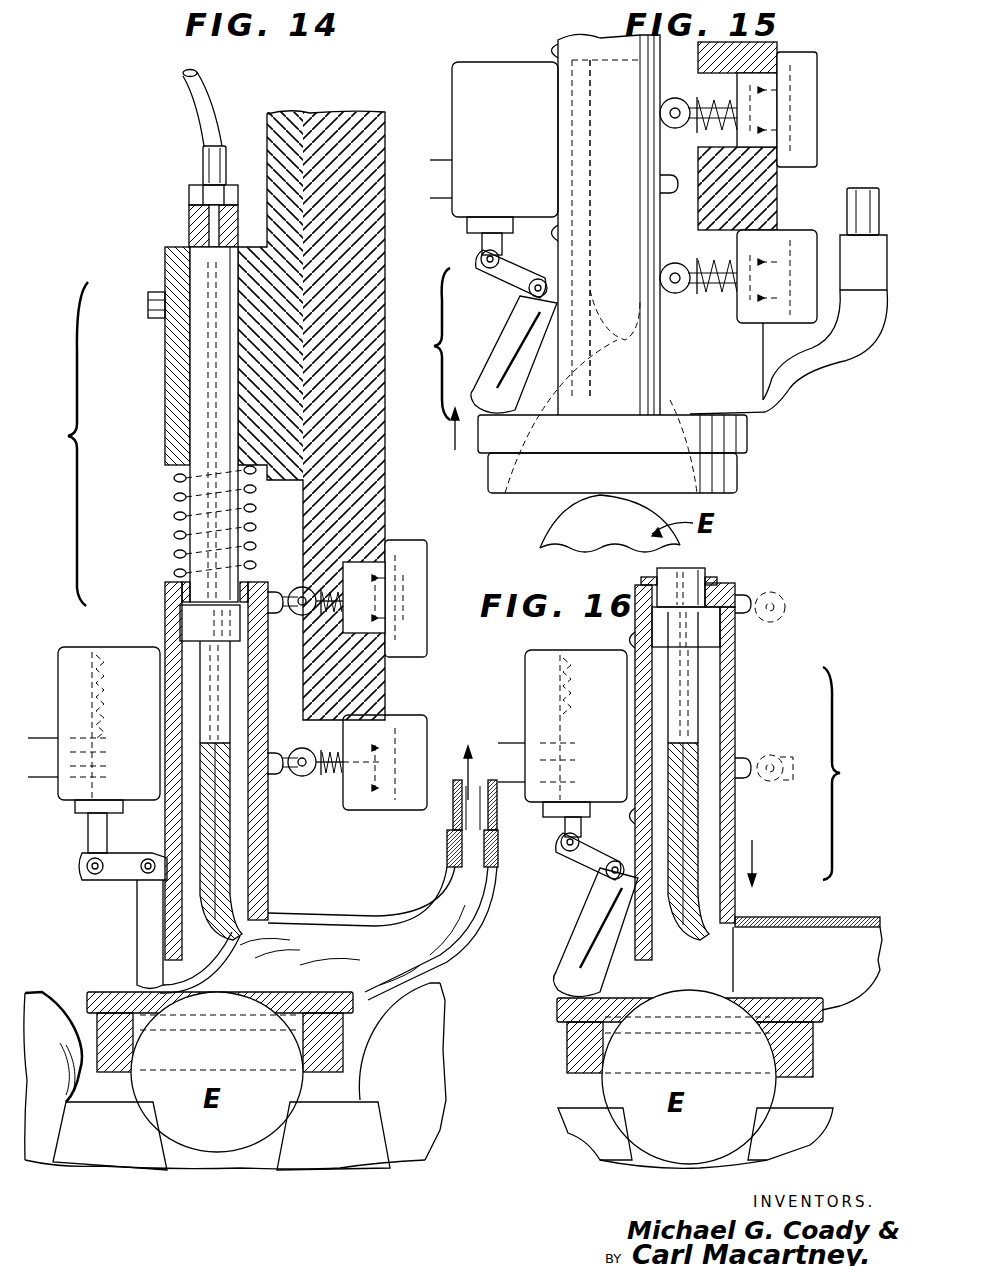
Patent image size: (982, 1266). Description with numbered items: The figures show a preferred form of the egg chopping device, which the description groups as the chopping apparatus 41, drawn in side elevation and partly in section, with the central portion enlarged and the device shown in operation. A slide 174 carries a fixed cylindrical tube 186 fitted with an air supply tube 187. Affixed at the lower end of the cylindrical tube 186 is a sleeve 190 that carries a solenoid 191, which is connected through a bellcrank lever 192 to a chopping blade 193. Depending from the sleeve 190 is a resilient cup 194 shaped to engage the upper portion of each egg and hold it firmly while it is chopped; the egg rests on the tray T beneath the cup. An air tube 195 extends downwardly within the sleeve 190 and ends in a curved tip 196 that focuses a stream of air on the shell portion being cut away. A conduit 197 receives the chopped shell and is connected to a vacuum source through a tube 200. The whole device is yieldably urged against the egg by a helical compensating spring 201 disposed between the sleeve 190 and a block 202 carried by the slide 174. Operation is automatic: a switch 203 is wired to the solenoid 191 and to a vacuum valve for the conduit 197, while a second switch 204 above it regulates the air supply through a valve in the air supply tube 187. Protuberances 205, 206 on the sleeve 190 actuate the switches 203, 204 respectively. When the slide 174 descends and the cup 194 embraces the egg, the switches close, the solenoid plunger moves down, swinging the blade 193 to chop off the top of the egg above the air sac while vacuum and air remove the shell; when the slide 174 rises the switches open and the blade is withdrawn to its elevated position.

In FIG. 14, the lubricating device assembly 41 is at (55, 444).
In FIG. 15, the lubricating device assembly 41 is at (426, 359).
In FIG. 16, the lubricating device assembly 41 is at (818, 776).
In FIG. 14, the slide 174 is at (283, 112).
In FIG. 14, the fixed cylindrical tube 186 is at (200, 432).
In FIG. 16, the fixed cylindrical tube 186 is at (690, 573).
In FIG. 14, the air supply tube 187 is at (203, 114).
In FIG. 14, the sleeve 190 is at (172, 594).
In FIG. 15, the sleeve 190 is at (563, 108).
In FIG. 14, the solenoid 191 is at (70, 640).
In FIG. 15, the solenoid 191 is at (494, 147).
In FIG. 16, the solenoid 191 is at (540, 650).
In FIG. 14, the bellcrank lever 192 is at (148, 912).
In FIG. 15, the bellcrank lever 192 is at (515, 328).
In FIG. 16, the bellcrank lever 192 is at (600, 906).
In FIG. 14, the chopping blade 193 is at (208, 977).
In FIG. 15, the chopping blade 193 is at (524, 406).
In FIG. 16, the chopping blade 193 is at (602, 985).
In FIG. 14, the resilient cup 194 is at (116, 1056).
In FIG. 15, the resilient cup 194 is at (507, 482).
In FIG. 16, the resilient cup 194 is at (580, 1053).
In FIG. 14, the air tube 195 is at (231, 828).
In FIG. 15, the air tube 195 is at (590, 200).
In FIG. 16, the air tube 195 is at (668, 676).
In FIG. 14, the curved tip 196 is at (238, 904).
In FIG. 15, the curved tip 196 is at (627, 343).
In FIG. 16, the curved tip 196 is at (686, 859).
In FIG. 14, the conduit 197 is at (458, 936).
In FIG. 15, the conduit 197 is at (830, 352).
In FIG. 16, the conduit 197 is at (873, 972).
In FIG. 14, the tube 200 is at (455, 795).
In FIG. 15, the tube 200 is at (862, 200).
In FIG. 14, the helical compensating spring 201 is at (185, 506).
In FIG. 14, the block 202 is at (176, 354).
In FIG. 14, the switch 203 is at (405, 738).
In FIG. 15, the switch 203 is at (783, 240).
In FIG. 14, the switch 204 is at (413, 612).
In FIG. 15, the switch 204 is at (802, 105).
In FIG. 14, the protuberance 205 is at (293, 777).
In FIG. 16, the protuberance 205 is at (750, 752).
In FIG. 14, the protuberance 206 is at (275, 599).
In FIG. 15, the protuberance 206 is at (690, 166).
In FIG. 16, the protuberance 206 is at (747, 594).
In FIG. 14, the tray T is at (333, 1140).
In FIG. 16, the tray T is at (805, 1115).